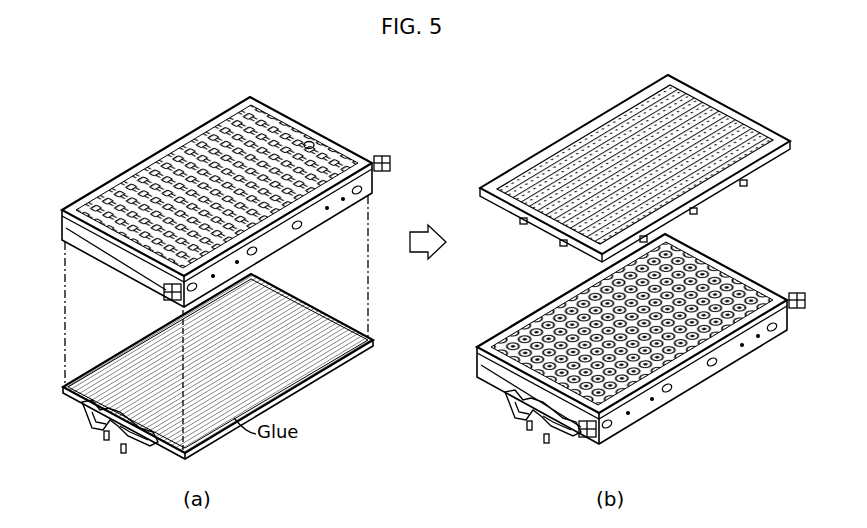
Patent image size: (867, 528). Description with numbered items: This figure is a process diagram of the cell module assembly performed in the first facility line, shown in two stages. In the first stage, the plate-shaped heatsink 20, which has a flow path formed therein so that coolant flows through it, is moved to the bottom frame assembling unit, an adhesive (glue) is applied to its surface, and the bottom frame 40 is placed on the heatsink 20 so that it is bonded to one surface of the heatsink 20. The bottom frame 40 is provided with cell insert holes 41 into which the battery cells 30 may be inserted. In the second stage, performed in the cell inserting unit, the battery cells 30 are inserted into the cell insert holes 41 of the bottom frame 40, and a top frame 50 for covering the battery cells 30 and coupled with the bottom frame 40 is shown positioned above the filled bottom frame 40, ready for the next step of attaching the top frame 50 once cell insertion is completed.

The heatsink 20 is at (68, 400).
The battery cell 30 is at (541, 312).
The bottom frame 40 is at (64, 230).
The cell insert hole 41 is at (114, 188).
The top frame 50 is at (580, 132).